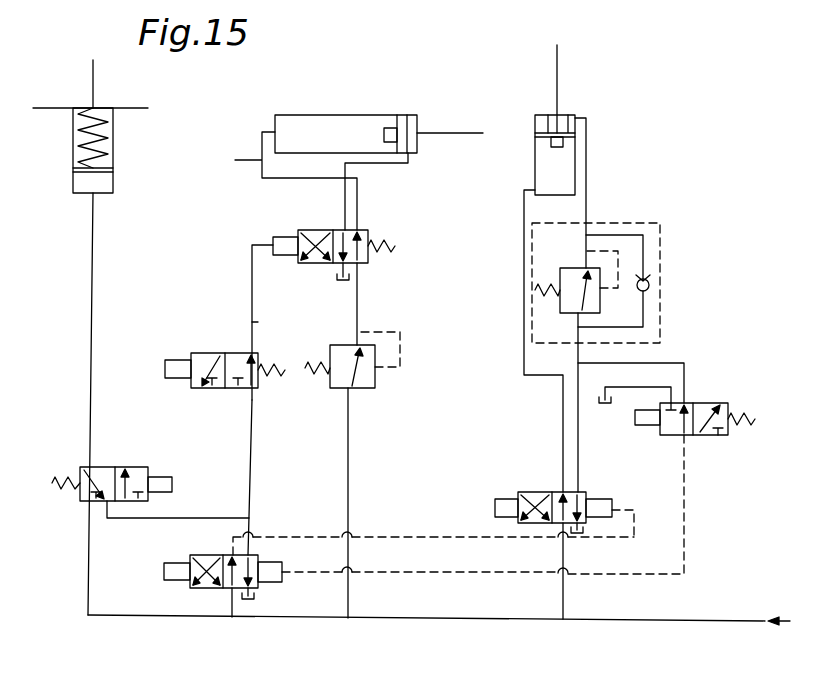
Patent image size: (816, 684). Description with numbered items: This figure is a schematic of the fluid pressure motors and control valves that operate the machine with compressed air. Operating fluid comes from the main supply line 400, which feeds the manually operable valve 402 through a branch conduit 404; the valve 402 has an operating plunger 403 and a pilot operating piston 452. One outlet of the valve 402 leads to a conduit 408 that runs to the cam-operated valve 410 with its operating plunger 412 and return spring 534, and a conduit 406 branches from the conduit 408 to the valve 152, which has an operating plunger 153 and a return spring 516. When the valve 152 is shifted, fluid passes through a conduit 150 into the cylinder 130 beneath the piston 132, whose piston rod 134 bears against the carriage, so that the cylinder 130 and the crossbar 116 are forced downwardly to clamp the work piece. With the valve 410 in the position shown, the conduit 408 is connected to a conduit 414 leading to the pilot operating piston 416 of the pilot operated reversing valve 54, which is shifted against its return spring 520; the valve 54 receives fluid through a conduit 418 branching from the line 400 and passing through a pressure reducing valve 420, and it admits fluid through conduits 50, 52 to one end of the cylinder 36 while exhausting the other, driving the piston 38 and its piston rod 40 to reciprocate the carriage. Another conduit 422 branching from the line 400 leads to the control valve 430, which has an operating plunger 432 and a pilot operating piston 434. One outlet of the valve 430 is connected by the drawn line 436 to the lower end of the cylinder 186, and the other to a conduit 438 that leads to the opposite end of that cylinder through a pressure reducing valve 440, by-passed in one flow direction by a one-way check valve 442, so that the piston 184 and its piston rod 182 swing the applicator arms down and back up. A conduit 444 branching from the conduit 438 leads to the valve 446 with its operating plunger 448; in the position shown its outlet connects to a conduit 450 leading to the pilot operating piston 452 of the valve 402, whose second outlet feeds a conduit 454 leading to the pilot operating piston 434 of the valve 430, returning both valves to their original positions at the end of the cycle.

The piston rod 134 is at (95, 89).
The crossbar 116 is at (133, 110).
The cylinder 130 is at (73, 155).
The piston 132 is at (105, 171).
The conduit 150 is at (92, 281).
The cylinder 36 is at (334, 116).
The piston 38 is at (418, 121).
The conduit 50 is at (281, 181).
The piston rod 40 is at (437, 135).
The conduit 52 is at (373, 165).
The pilot operated reversing valve 54 is at (319, 229).
The return spring 520 is at (391, 249).
The pilot operating piston 416 is at (279, 256).
The conduit 414 is at (253, 322).
The return spring 534 is at (278, 365).
The operating plunger 412 is at (176, 359).
The cam-operated valve 410 is at (212, 339).
The pressure reducing valve 420 is at (375, 382).
The return spring 516 is at (72, 464).
The valve 152 is at (137, 467).
The operating plunger 153 is at (173, 477).
The conduit 406 is at (200, 518).
The conduit 408 is at (252, 458).
The conduit 418 is at (348, 458).
The main supply line 400 is at (705, 650).
The manually operable valve 402 is at (207, 555).
The operating plunger 403 is at (166, 581).
The branch conduit 404 is at (236, 612).
The pilot operating piston 452 is at (294, 553).
The conduit 454 is at (396, 536).
The conduit 450 is at (716, 481).
The piston rod 182 is at (558, 72).
The cylinder 186 is at (547, 113).
The piston 184 is at (569, 113).
The conduit 438 is at (592, 449).
The line 436 is at (563, 403).
The pressure reducing valve 440 is at (596, 283).
The one-way check valve 442 is at (649, 287).
The conduit 444 is at (684, 363).
The valve 446 is at (710, 403).
The operating plunger 448 is at (635, 424).
The control valve 430 is at (581, 491).
The operating plunger 432 is at (496, 500).
The pilot operating piston 434 is at (613, 503).
The conduit 422 is at (563, 557).